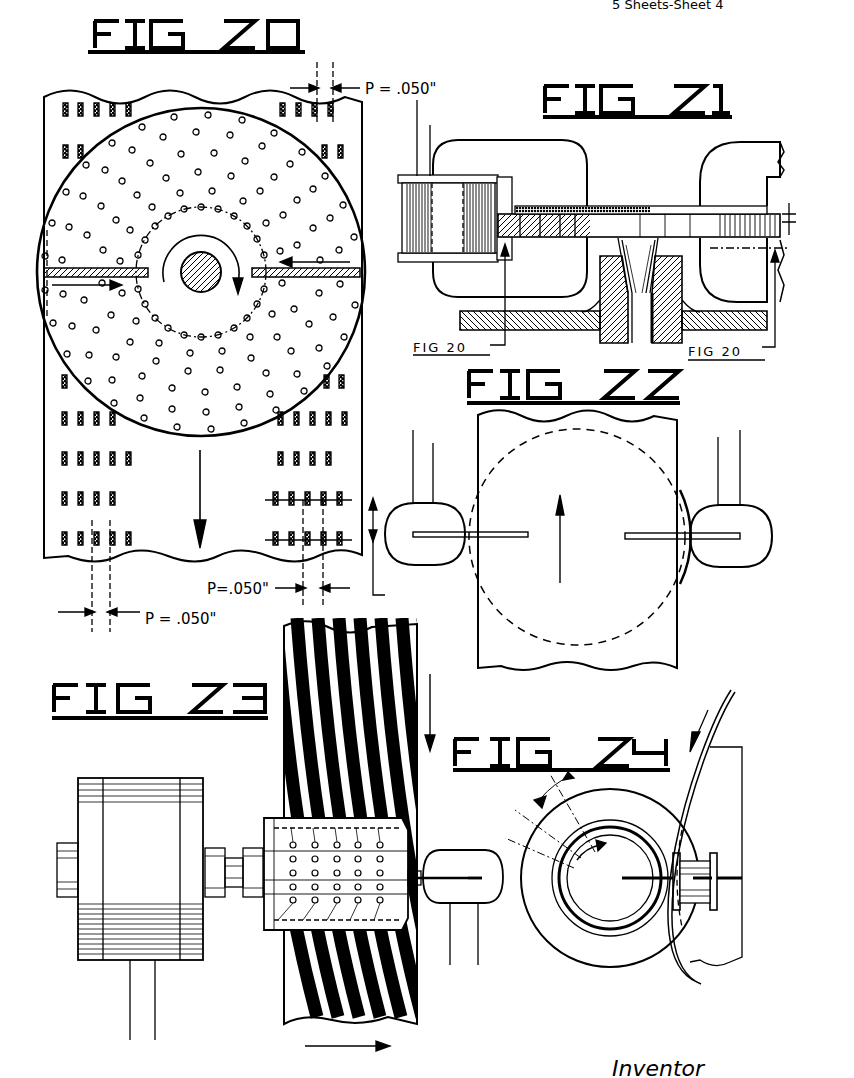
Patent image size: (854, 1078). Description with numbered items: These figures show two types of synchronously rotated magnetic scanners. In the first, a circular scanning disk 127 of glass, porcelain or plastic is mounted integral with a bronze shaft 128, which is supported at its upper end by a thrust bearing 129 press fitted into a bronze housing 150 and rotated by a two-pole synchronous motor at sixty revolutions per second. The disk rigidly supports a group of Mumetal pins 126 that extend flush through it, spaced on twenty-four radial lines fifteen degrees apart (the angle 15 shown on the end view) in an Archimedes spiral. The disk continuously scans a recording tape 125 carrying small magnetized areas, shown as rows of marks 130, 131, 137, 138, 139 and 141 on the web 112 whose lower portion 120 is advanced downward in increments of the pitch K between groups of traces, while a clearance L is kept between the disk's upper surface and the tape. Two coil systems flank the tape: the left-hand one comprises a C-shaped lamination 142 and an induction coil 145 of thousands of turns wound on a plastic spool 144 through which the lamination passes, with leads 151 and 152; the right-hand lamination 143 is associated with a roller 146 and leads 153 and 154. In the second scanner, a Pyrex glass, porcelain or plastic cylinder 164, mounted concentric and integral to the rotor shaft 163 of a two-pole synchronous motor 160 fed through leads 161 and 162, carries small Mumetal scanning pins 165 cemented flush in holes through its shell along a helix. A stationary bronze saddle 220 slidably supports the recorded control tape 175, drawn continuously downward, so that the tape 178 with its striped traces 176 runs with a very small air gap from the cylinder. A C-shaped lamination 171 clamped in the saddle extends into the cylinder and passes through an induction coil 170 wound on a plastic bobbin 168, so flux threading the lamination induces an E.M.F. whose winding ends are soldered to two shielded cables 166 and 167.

In FIG. 20, the web strip 112 is at (92, 100).
In FIG. 20, the tape lower portion 120 is at (70, 545).
In FIG. 20, the recording tape 125 is at (192, 92).
In FIG. 21, the recording tape 125 is at (630, 203).
In FIG. 22, the recording tape 125 is at (670, 436).
In FIG. 20, the pins 126 is at (205, 110).
In FIG. 21, the pins 126 is at (594, 206).
In FIG. 20, the scanning disk 127 is at (147, 128).
In FIG. 21, the scanning disk 127 is at (639, 225).
In FIG. 22, the scanning disk 127 is at (692, 516).
In FIG. 20, the shaft 128 is at (201, 292).
In FIG. 21, the shaft 128 is at (652, 345).
In FIG. 21, the thrust bearing 129 is at (600, 338).
In FIG. 20, the printed marks row 130 is at (333, 108).
In FIG. 20, the printed marks row 131 is at (343, 152).
In FIG. 20, the printed marks row 137 is at (339, 388).
In FIG. 20, the printed marks row 138 is at (348, 420).
In FIG. 20, the printed marks row 139 is at (343, 462).
In FIG. 20, the printed marks row 141 is at (328, 556).
In FIG. 20, the lamination 142 is at (105, 262).
In FIG. 21, the lamination 142 is at (562, 158).
In FIG. 22, the lamination 142 is at (502, 532).
In FIG. 20, the lamination 143 is at (360, 277).
In FIG. 21, the lamination 143 is at (716, 164).
In FIG. 22, the lamination 143 is at (658, 538).
In FIG. 21, the plastic spool 144 is at (404, 190).
In FIG. 22, the plastic spool 144 is at (415, 565).
In FIG. 21, the induction coil 145 is at (402, 232).
In FIG. 22, the roller 146 is at (732, 568).
In FIG. 21, the housing 150 is at (556, 298).
In FIG. 21, the lead wire 151 is at (417, 104).
In FIG. 22, the lead wire 151 is at (413, 434).
In FIG. 21, the lead wire 152 is at (430, 130).
In FIG. 22, the lead wire 152 is at (433, 446).
In FIG. 22, the lead wire 153 is at (718, 454).
In FIG. 22, the lead wire 154 is at (740, 450).
In FIG. 23, the synchronous motor 160 is at (162, 764).
In FIG. 24, the synchronous motor 160 is at (631, 802).
In FIG. 23, the lead 161 is at (130, 1012).
In FIG. 23, the lead 162 is at (155, 1013).
In FIG. 23, the rotor shaft 163 is at (234, 887).
In FIG. 23, the cylinder 164 is at (276, 818).
In FIG. 24, the cylinder 164 is at (612, 936).
In FIG. 23, the scanning pins 165 is at (380, 845).
In FIG. 23, the shielded cable 166 is at (450, 940).
In FIG. 23, the shielded cable 167 is at (477, 961).
In FIG. 23, the bobbin 168 is at (480, 838).
In FIG. 24, the bobbin 168 is at (716, 868).
In FIG. 24, the induction coil 170 is at (704, 850).
In FIG. 23, the lamination 171 is at (482, 903).
In FIG. 24, the lamination 171 is at (730, 880).
In FIG. 24, the control tape 175 is at (723, 710).
In FIG. 23, the stripe 176 is at (292, 745).
In FIG. 23, the tape 178 is at (294, 779).
In FIG. 24, the saddle 220 is at (726, 939).
In FIG. 20, the pitch K is at (385, 552).
In FIG. 21, the clearance L is at (789, 210).
In FIG. 24, the 15 degree angle 15 is at (548, 820).